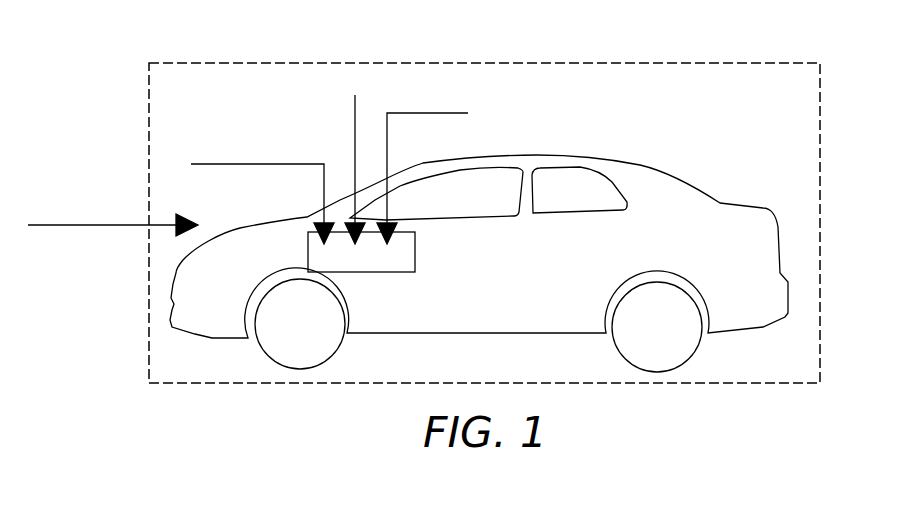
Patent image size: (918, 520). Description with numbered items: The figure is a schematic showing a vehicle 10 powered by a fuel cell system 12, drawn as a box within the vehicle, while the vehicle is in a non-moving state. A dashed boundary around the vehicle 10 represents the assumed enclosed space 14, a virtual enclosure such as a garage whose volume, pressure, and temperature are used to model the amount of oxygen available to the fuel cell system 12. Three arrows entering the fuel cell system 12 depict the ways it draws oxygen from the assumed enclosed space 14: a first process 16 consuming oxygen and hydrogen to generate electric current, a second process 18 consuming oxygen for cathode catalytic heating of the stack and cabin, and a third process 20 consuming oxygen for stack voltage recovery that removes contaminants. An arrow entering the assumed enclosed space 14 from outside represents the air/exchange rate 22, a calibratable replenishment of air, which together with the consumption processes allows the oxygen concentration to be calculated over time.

The vehicle 10 is at (647, 162).
The fuel cell system (FCS) 12 is at (400, 252).
The assumed enclosed space 14 is at (177, 63).
The first process 16 is at (262, 164).
The second process 18 is at (355, 130).
The third process 20 is at (445, 113).
The air/exchange rate 22 is at (105, 225).